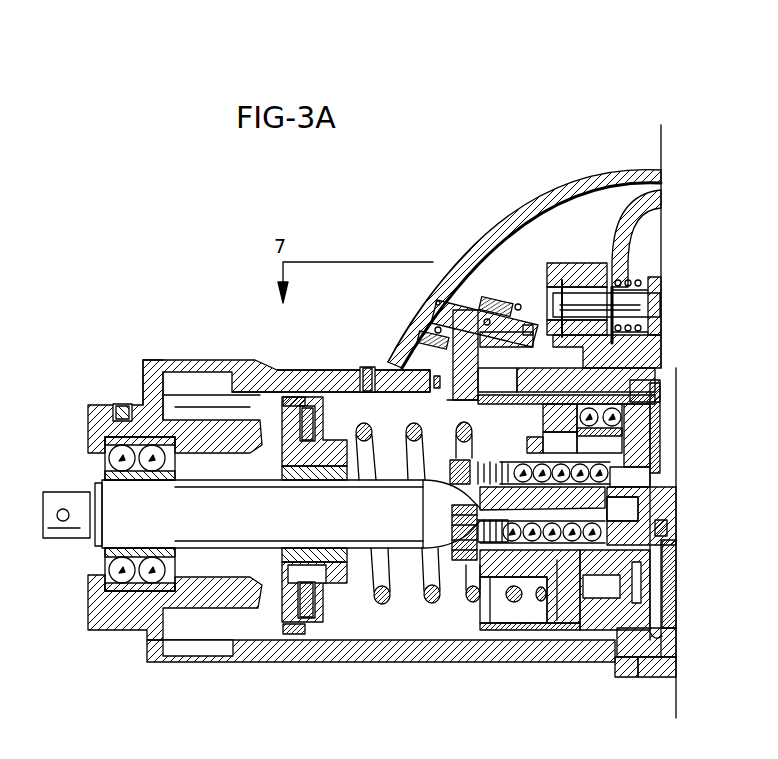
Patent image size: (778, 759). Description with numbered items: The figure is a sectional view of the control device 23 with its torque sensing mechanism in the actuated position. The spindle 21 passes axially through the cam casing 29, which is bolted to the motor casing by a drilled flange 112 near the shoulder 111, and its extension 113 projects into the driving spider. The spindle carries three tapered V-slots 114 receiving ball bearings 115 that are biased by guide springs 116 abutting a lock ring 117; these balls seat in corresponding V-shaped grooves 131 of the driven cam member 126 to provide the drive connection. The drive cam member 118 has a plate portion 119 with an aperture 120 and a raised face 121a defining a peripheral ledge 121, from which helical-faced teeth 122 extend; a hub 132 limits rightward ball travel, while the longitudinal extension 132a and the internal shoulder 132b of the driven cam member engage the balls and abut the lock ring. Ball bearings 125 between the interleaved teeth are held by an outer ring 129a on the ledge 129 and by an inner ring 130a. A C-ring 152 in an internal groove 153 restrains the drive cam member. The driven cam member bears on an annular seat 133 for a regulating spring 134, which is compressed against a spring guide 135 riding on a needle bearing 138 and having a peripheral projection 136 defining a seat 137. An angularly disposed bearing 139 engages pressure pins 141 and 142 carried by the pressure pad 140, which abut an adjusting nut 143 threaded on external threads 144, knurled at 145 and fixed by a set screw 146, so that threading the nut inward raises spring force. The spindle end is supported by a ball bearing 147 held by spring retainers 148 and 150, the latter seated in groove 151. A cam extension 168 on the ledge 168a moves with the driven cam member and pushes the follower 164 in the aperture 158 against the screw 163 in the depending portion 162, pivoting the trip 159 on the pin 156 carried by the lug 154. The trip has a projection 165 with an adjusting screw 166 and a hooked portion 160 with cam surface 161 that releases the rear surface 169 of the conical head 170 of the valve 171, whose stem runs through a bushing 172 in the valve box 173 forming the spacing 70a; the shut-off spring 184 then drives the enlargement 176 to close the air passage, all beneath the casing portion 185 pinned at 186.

The control device 23 is at (702, 203).
The spacing 70a is at (644, 236).
The casing portion 185 is at (582, 192).
The pin connection 186 is at (357, 368).
The valve box 173 is at (627, 203).
The bushing 172 is at (640, 262).
The rear surface 169 is at (578, 300).
The valve 171 is at (633, 300).
The cylindrical enlargement 176 is at (660, 305).
The shut-off spring 184 is at (653, 273).
The conical head portion 170 is at (560, 300).
The adjusting screw 166 is at (487, 300).
The outer cam surface 161 is at (530, 330).
The hooked portion 160 is at (523, 328).
The trip 159 is at (437, 302).
The lug 154 is at (502, 364).
The pin 156 is at (467, 317).
The upwardly extending projection 165 is at (495, 307).
The depending portion 162 is at (417, 353).
The screw 163 is at (410, 327).
The follower 164 is at (452, 400).
The aperture 158 is at (420, 391).
The outer annular ring 129a is at (663, 371).
The peripheral ledge 129 is at (560, 406).
The drive cam member 118 is at (640, 456).
The C-ring 152 is at (658, 396).
The plate portion 119 is at (630, 425).
The extension 113 is at (626, 509).
The aperture 120 is at (640, 478).
The V-shaped grooves 131 is at (554, 428).
The ball bearings 125 is at (599, 428).
The inner ring 130a is at (642, 450).
The guide springs 116 is at (455, 494).
The lock ring 117 is at (452, 474).
The ball bearings 115 is at (452, 513).
The V-slots 114 is at (417, 484).
The driven cam member 126 is at (554, 545).
The annular seat 133 is at (513, 601).
The raised face 121a is at (637, 572).
The teeth 122 is at (612, 620).
The peripheral ledge 121 is at (660, 631).
The internal groove 153 is at (665, 640).
The hub 132 is at (662, 533).
The cam casing 29 is at (432, 662).
The flange 112 is at (625, 670).
The shoulder 111 is at (660, 670).
The cam extension 168 is at (505, 630).
The ledge 168a is at (557, 630).
The groove 151 is at (90, 598).
The pressure pins 141 is at (190, 628).
The adjusting nut 143 is at (165, 362).
The knurled surface 145 is at (147, 362).
The pressure pins 142 is at (292, 390).
The external threads 144 is at (193, 415).
The set screw 146 is at (127, 403).
The spring retainer 148 is at (103, 495).
The spindle 21 is at (60, 539).
The ball bearing 147 is at (110, 458).
The spring retainer 150 is at (97, 577).
The spring guide 135 is at (295, 462).
The needle bearing 138 is at (332, 473).
The angularly disposed bearing 139 is at (310, 407).
The hub 140 is at (270, 597).
The peripheral projection 136 is at (308, 622).
The seat 137 is at (335, 585).
The regulating spring 134 is at (427, 600).
The longitudinal extension 132a is at (463, 441).
The internal shoulder 132b is at (467, 603).